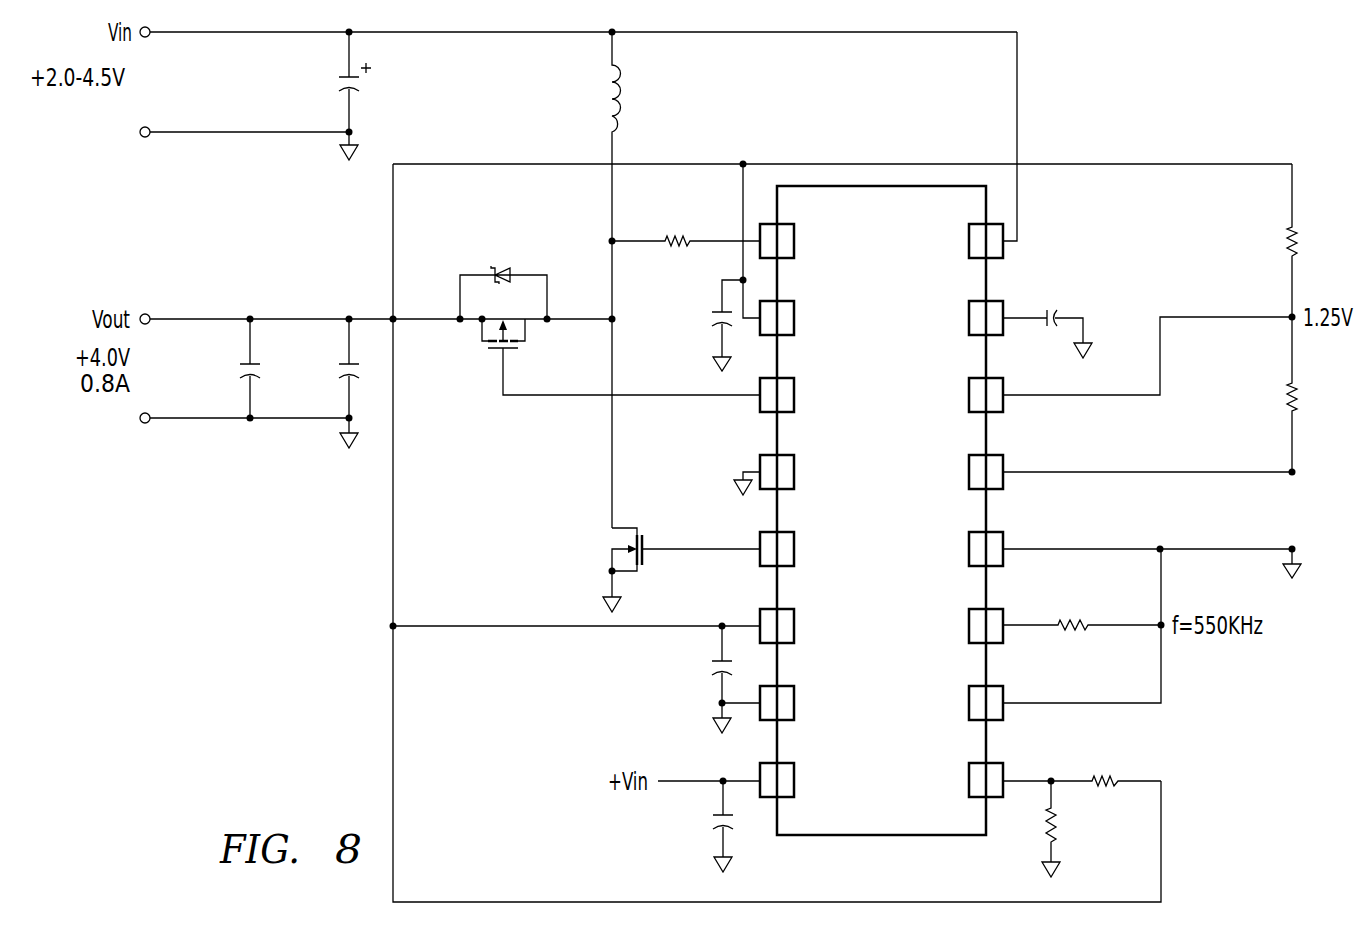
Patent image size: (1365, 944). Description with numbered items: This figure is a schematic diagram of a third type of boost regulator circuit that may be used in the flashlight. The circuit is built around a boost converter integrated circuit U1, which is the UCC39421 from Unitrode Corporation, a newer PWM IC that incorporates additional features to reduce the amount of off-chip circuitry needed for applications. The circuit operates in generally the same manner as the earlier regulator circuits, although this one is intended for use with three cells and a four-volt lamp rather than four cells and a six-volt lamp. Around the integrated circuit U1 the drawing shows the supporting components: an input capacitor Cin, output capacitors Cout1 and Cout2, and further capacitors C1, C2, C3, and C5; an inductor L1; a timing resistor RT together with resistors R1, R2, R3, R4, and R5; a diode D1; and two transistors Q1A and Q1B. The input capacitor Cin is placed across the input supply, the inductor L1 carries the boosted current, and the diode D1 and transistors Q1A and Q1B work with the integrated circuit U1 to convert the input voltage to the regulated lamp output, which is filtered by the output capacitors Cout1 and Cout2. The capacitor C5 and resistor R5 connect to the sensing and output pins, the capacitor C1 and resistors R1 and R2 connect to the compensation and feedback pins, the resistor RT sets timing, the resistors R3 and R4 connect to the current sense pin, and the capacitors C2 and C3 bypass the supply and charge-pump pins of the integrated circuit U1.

The capacitor Cin is at (323, 96).
The inductor L1 is at (657, 280).
The resistor R5 is at (686, 213).
The capacitor C5 is at (712, 267).
The capacitor Cout1 is at (321, 383).
The capacitor Cout2 is at (220, 368).
The diode D1 is at (501, 264).
The transistor Q1B is at (592, 370).
The transistor Q1A is at (648, 562).
The capacitor C3 is at (706, 678).
The capacitor C2 is at (693, 825).
The boost converter integrated circuit U1 is at (881, 510).
The capacitor C1 is at (1047, 305).
The resistor R2 is at (1320, 240).
The resistor R1 is at (1312, 394).
The resistor RT is at (1084, 596).
The resistor R4 is at (1082, 752).
The resistor R3 is at (1070, 828).